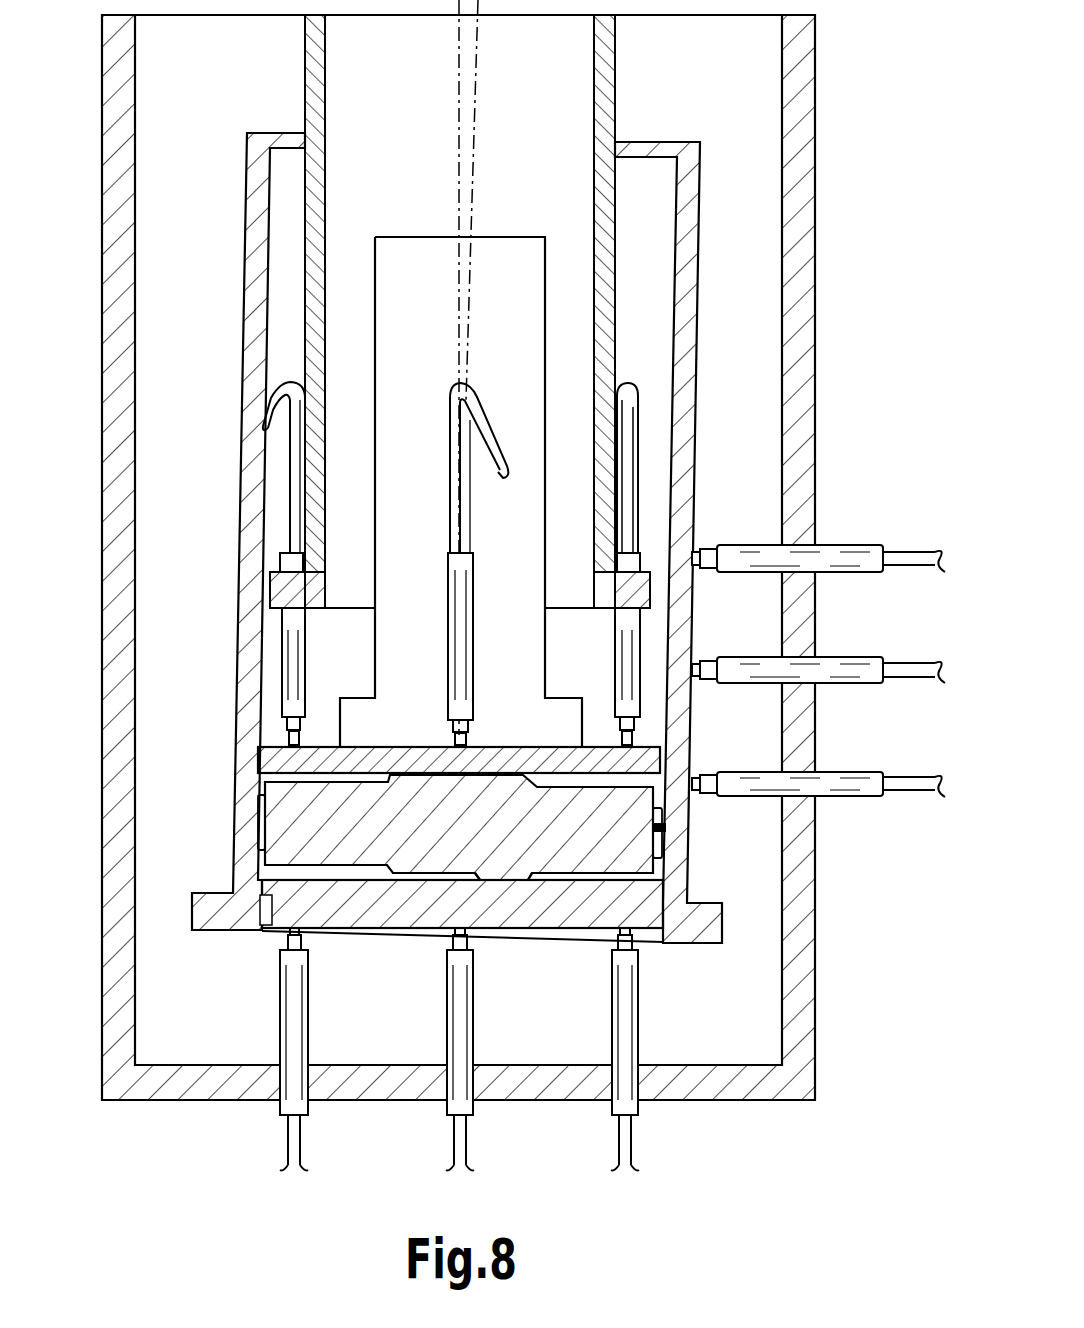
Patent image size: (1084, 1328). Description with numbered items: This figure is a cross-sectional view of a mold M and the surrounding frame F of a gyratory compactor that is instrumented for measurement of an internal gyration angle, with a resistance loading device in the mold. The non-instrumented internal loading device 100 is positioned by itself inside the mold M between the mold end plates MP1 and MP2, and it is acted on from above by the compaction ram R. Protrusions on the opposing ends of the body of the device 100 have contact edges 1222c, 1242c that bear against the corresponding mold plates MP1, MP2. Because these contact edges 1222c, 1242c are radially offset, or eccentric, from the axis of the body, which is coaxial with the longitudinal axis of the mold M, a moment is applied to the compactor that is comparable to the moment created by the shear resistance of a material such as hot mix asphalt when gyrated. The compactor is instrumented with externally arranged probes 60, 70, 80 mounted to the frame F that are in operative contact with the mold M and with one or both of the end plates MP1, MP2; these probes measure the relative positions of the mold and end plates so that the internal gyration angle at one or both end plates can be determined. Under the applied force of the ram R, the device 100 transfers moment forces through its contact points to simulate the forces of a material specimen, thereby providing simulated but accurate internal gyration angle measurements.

The frame F is at (800, 258).
The mold M is at (700, 322).
The compaction ram R is at (545, 352).
The externally arranged probes 60 is at (292, 668).
The externally arranged probes 70 is at (843, 784).
The externally arranged probes 80 is at (290, 1027).
The non-instrumented internal loading device 100 is at (663, 828).
The contact edge 1222c is at (390, 775).
The contact edge 1242c is at (528, 879).
The mold end plate MP1 is at (657, 756).
The mold end plate MP2 is at (622, 906).